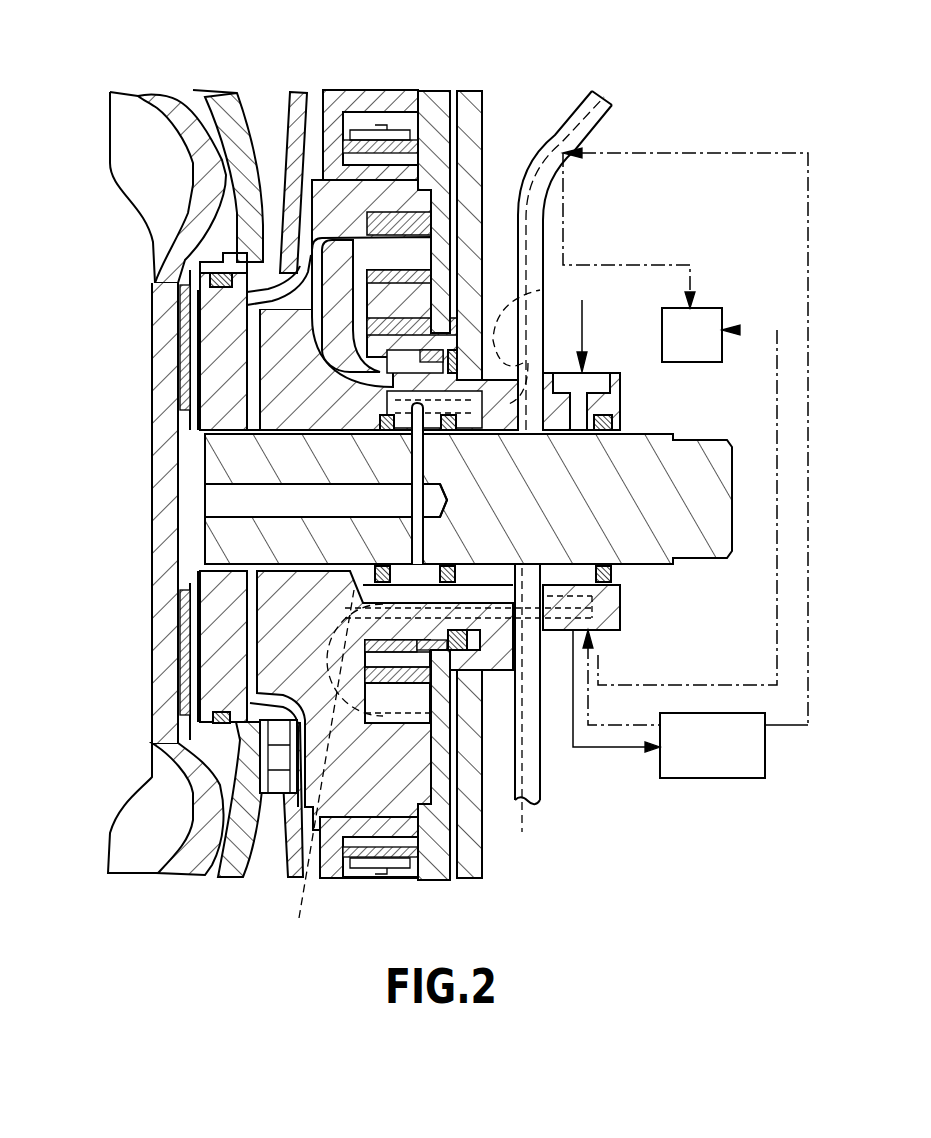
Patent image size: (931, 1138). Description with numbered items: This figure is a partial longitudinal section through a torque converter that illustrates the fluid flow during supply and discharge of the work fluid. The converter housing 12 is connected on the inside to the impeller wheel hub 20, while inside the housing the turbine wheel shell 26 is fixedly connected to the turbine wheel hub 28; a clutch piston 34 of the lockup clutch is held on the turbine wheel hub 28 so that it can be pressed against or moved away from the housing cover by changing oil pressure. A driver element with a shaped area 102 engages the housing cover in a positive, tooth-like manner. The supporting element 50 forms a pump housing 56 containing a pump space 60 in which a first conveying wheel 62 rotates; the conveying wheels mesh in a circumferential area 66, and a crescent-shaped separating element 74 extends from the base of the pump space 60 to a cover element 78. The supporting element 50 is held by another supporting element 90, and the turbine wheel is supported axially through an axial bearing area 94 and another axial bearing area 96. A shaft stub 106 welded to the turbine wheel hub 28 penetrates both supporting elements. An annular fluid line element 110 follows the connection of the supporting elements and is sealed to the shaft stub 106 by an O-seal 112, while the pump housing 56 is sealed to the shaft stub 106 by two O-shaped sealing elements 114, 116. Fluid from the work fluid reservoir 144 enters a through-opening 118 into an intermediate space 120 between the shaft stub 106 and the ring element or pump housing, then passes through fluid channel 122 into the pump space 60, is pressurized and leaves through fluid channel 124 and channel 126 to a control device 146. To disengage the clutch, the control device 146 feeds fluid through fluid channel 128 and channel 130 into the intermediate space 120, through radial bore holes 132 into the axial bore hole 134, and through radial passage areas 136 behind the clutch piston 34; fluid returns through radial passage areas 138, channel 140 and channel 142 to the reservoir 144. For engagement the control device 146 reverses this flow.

The converter housing 12 is at (152, 637).
The impeller wheel hub 20 is at (482, 113).
The turbine wheel shell 26 is at (290, 92).
The turbine wheel hub 28 is at (207, 427).
The clutch piston 34 is at (230, 90).
The supporting element 50 is at (267, 675).
The pump housing 56 is at (358, 138).
The pump space 60 is at (420, 255).
The first conveying wheel 62 is at (390, 322).
The circumferential area 66 is at (377, 227).
The separating element 74 is at (290, 238).
The cover element 78 is at (437, 118).
The supporting element 90 is at (592, 91).
The axial bearing area 94 is at (265, 357).
The axial bearing area 96 is at (183, 667).
The shaped area 102 is at (115, 842).
The shaft stub 106 is at (225, 478).
The annular fluid line element 110 is at (620, 373).
The O-seal 112 is at (620, 415).
The O-shaped sealing element 114 is at (375, 442).
The O-shaped sealing element 116 is at (540, 580).
The through-opening 118 is at (567, 380).
The intermediate space 120 is at (548, 620).
The fluid channel 122 is at (250, 382).
The fluid channel 124 is at (330, 767).
The channel 126 is at (528, 709).
The fluid channel 128 is at (608, 94).
The channel 130 is at (523, 363).
The radial bore holes 132 is at (440, 500).
The axial bore hole 134 is at (423, 507).
The radial passage areas 136 is at (185, 285).
The radial passage areas 138 is at (240, 350).
The channel 140 is at (365, 878).
The channel 142 is at (620, 628).
The work fluid reservoir 144 is at (703, 312).
The control device 146 is at (727, 780).